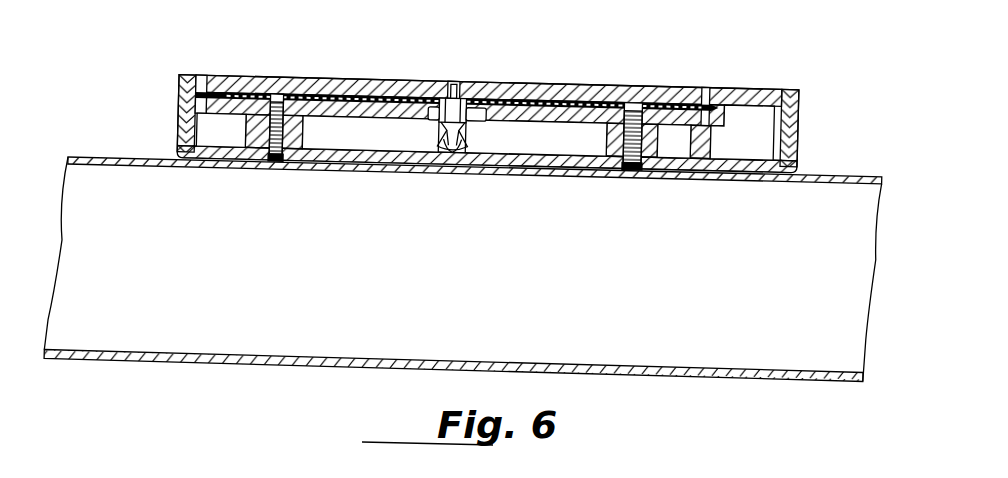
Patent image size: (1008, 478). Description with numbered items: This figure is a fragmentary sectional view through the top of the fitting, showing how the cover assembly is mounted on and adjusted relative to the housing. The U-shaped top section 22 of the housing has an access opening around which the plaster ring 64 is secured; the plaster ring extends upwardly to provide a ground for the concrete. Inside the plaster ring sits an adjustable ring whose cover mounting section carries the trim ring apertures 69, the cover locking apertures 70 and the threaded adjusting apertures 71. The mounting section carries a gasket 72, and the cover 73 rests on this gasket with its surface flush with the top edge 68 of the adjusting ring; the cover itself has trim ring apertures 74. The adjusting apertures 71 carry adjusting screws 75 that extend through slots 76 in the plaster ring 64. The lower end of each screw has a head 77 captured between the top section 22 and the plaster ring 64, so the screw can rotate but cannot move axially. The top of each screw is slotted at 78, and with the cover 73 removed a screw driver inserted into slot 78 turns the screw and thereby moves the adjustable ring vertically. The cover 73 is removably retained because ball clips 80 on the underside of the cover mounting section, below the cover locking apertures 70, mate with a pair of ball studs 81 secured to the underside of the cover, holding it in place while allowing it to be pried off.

The top section 22 is at (733, 183).
The plaster ring 64 is at (178, 125).
The top edge 68 is at (191, 73).
The trim ring apertures 69 is at (213, 128).
The cover locking apertures 70 is at (458, 86).
The threaded adjusting apertures 71 is at (255, 158).
The gasket 72 is at (258, 98).
The cover 73 is at (378, 80).
The trim ring apertures 74 is at (205, 90).
The adjusting screws 75 is at (303, 128).
The slots 76 is at (311, 168).
The head 77 is at (274, 160).
The slot 78 is at (286, 98).
The ball clips 80 is at (468, 130).
The ball studs 81 is at (446, 152).